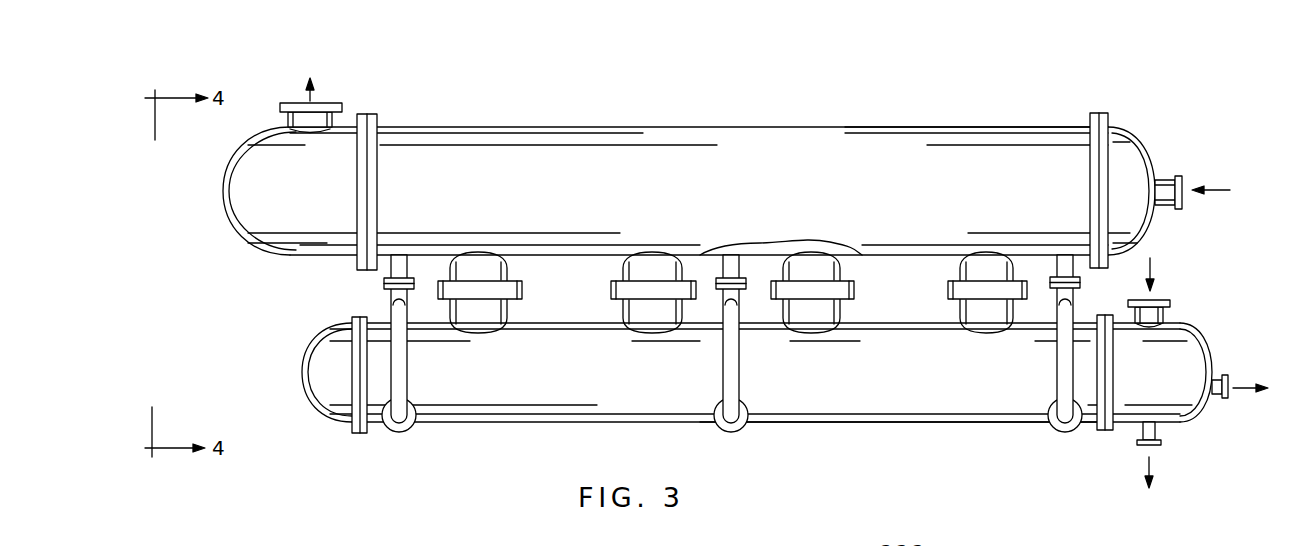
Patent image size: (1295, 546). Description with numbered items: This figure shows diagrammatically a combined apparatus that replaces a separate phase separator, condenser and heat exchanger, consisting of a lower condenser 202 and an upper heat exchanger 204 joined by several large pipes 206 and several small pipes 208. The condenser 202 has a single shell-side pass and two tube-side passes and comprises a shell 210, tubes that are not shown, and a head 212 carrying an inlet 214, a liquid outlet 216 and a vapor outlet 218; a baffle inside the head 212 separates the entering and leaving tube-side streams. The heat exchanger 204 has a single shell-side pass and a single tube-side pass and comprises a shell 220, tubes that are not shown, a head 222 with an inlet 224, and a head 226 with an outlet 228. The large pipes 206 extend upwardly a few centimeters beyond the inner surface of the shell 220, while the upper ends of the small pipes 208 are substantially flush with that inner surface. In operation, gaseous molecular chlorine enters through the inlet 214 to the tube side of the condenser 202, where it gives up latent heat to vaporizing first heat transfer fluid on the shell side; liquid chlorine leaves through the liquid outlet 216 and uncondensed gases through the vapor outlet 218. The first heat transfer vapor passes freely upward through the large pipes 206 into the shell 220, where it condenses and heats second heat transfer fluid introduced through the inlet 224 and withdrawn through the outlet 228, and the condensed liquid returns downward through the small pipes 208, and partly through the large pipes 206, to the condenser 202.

The condenser 202 is at (542, 425).
The heat exchanger 204 is at (603, 127).
The large pipes 206 is at (622, 273).
The small pipes 208 is at (407, 368).
The shell 210 is at (855, 425).
The head 212 is at (1205, 338).
The inlet 214 is at (1163, 300).
The liquid outlet 216 is at (1160, 446).
The vapor outlet 218 is at (1228, 380).
The shell 220 is at (862, 127).
The head 222 is at (1143, 144).
The inlet 224 is at (1182, 180).
The head 226 is at (228, 212).
The outlet 228 is at (322, 104).